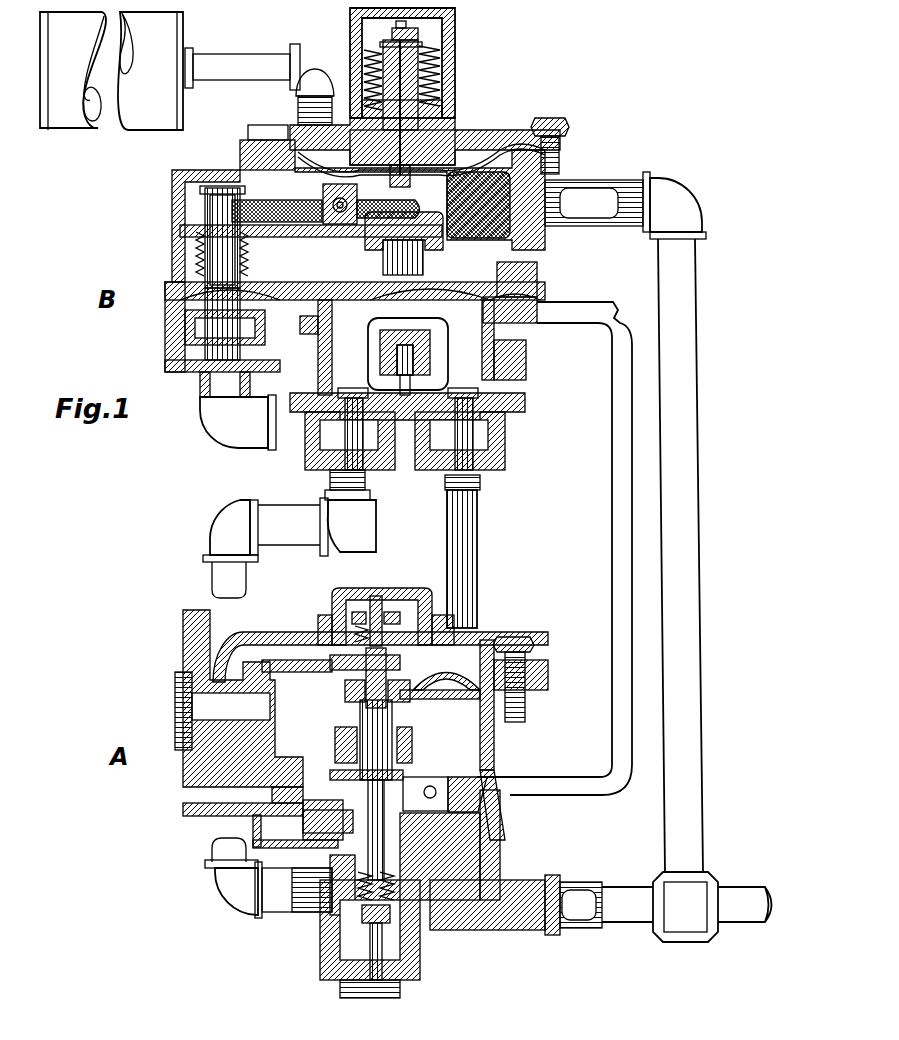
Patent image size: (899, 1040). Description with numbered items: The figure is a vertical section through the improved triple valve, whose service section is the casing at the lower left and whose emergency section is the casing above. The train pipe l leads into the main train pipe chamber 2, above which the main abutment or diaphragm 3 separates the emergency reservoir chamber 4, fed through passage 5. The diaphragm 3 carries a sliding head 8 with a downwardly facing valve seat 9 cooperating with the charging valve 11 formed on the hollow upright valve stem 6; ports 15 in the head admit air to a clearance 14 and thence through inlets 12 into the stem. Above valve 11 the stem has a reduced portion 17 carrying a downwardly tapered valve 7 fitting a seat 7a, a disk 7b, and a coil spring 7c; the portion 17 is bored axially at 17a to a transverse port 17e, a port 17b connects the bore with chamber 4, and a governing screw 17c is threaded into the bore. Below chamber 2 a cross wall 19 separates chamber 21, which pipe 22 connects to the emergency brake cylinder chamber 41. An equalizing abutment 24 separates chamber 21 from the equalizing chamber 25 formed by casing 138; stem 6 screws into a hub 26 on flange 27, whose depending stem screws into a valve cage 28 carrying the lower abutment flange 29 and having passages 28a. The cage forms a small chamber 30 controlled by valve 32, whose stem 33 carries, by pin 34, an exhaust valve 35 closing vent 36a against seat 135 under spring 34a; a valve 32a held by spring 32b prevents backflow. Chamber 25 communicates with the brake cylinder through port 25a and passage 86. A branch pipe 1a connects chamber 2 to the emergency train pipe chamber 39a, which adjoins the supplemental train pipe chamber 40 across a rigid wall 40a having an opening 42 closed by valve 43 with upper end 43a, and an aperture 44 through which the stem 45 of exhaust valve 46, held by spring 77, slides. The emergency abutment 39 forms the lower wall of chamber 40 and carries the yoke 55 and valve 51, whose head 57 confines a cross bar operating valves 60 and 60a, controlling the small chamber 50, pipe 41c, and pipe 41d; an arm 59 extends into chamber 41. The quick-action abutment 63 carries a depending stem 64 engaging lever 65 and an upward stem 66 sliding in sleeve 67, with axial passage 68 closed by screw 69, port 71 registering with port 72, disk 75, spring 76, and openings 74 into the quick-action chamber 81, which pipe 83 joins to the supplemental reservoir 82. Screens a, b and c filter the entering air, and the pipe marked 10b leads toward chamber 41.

The supplemental reservoir 82 is at (160, 40).
The pipe 83 is at (245, 66).
The sleeve 67 is at (381, 105).
The transverse aperture or port 72 is at (378, 46).
The spring 76 is at (372, 78).
The transverse port 71 is at (392, 44).
The screw 69 is at (418, 33).
The disk 75 is at (444, 64).
The axial passage 68 is at (453, 72).
The upwardly extending stem 66 is at (450, 100).
The openings 74 is at (445, 115).
The quick-action chamber 81 is at (452, 138).
The depending stem 64 is at (436, 130).
The quick-action abutment or diaphragm 63 is at (498, 163).
The emergency train pipe chamber 39a is at (524, 152).
The lever 65 is at (266, 205).
The screen a is at (556, 180).
The screen b is at (429, 230).
The aperture 44 is at (180, 231).
The stem 45 is at (210, 242).
The spring 77 is at (205, 262).
The rigid wall 40a is at (300, 238).
The upper cylindrical end 43a is at (362, 246).
The opening 42 is at (390, 260).
The valve 43 is at (418, 262).
The supplemental train pipe chamber 40 is at (484, 271).
The pipe 10b is at (606, 302).
The emergency abutment 39 is at (534, 321).
The exhaust valve 46 is at (190, 330).
The yoke 55 is at (379, 352).
The arm 59 is at (434, 340).
The head 57 is at (426, 367).
The emergency brake cylinder chamber 41 is at (466, 350).
The branch pipe 1a is at (690, 420).
The valve 60a is at (340, 432).
The valve 51 is at (340, 455).
The valve 60 is at (497, 440).
The small chamber 50 is at (496, 460).
The pipe 41d is at (218, 538).
The pipe 41c is at (480, 528).
The pipe 22 is at (621, 568).
The port 17b is at (350, 606).
The disk 7b is at (352, 614).
The seat 7a is at (346, 622).
The reduced portion 17 is at (336, 632).
The governing screw 17c is at (384, 604).
The axial bore 17a is at (402, 612).
The coil spring 7c is at (440, 610).
The downwardly tapered valve 7 is at (440, 618).
The valve seat 9 is at (482, 630).
The emergency reservoir chamber 4 is at (473, 650).
The main abutment or diaphragm 3 is at (494, 640).
The passage 5 is at (203, 707).
The transverse port 17e is at (355, 650).
The sliding head 8 is at (398, 648).
The clearance 14 is at (350, 690).
The charging valve 11 is at (374, 690).
The inlets 12 is at (391, 702).
The hollow upright valve stem 6 is at (404, 738).
The ports 15 is at (446, 700).
The screen c is at (472, 746).
The main train pipe chamber 2 is at (464, 747).
The chamber 21 is at (462, 790).
The valve 32a is at (496, 790).
The passage 86 is at (208, 794).
The flange 27 is at (346, 808).
The hub 26 is at (362, 792).
The cross wall 19 is at (422, 772).
The equalizing abutment 24 is at (500, 820).
The lower abutment flange 29 is at (440, 848).
The valve cage 28 is at (360, 840).
The small chamber 30 is at (500, 852).
The spring 32b is at (500, 862).
The valve 32 is at (346, 858).
The stem 33 is at (496, 870).
The train pipe l is at (614, 895).
The port 25a is at (262, 862).
The passages 28a is at (282, 912).
The pin 34 is at (358, 918).
The exhaust valve 35 is at (332, 955).
The vent 36a is at (346, 990).
The spring 34a is at (482, 892).
The casing 138 is at (466, 932).
The equalizing chamber 25 is at (446, 936).
The valve seat 135 is at (432, 976).